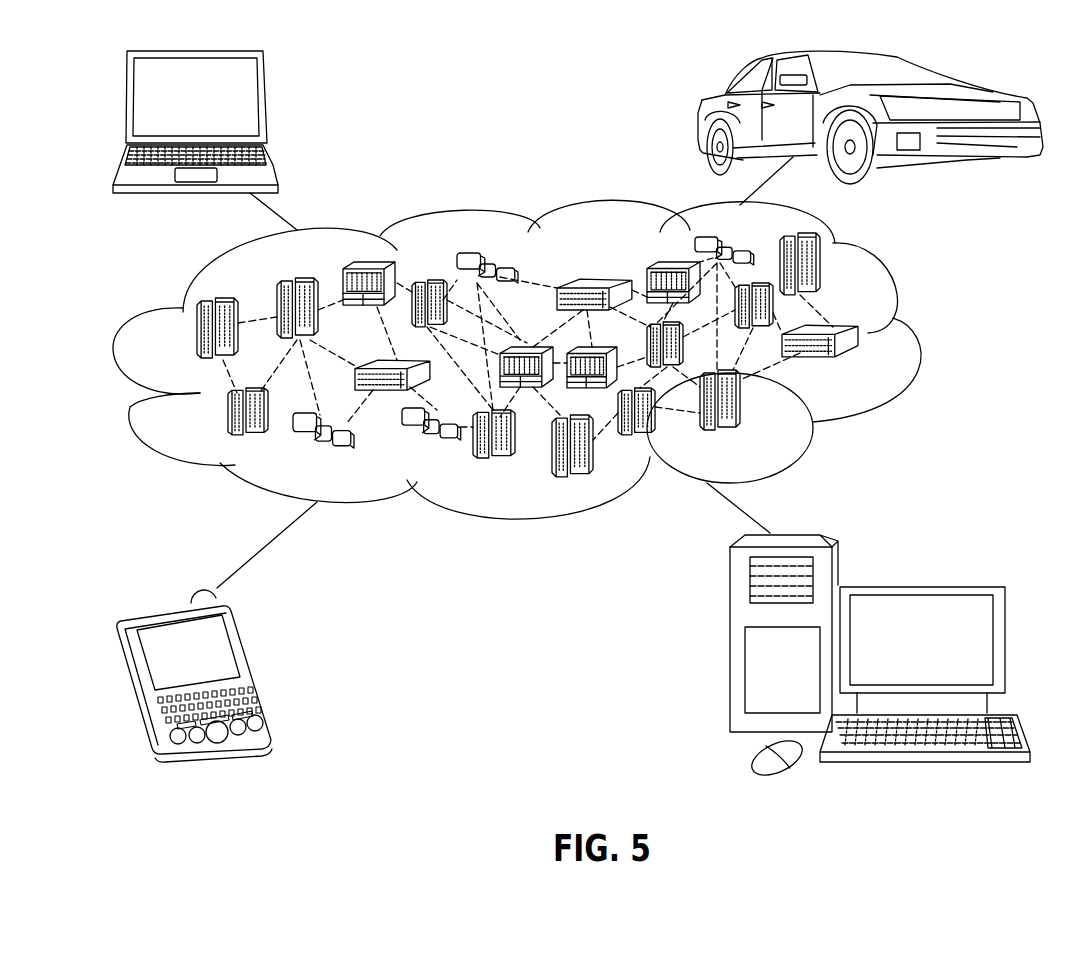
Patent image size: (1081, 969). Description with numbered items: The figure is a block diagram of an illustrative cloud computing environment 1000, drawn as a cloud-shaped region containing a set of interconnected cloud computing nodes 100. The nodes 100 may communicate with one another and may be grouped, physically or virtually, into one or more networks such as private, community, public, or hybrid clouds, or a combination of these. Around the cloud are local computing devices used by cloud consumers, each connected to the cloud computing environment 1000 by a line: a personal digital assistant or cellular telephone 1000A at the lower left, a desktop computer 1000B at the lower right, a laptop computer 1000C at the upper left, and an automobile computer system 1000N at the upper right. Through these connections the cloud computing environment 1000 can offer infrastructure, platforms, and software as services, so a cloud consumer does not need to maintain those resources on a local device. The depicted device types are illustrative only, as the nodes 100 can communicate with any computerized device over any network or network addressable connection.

The cloud computing environment 1000 is at (547, 359).
The cloud computing nodes 100 is at (861, 363).
The personal digital assistant (PDA) or cellular telephone 1000A is at (257, 662).
The desktop computer 1000B is at (920, 583).
The laptop computer 1000C is at (268, 102).
The automobile computer system 1000N is at (702, 118).